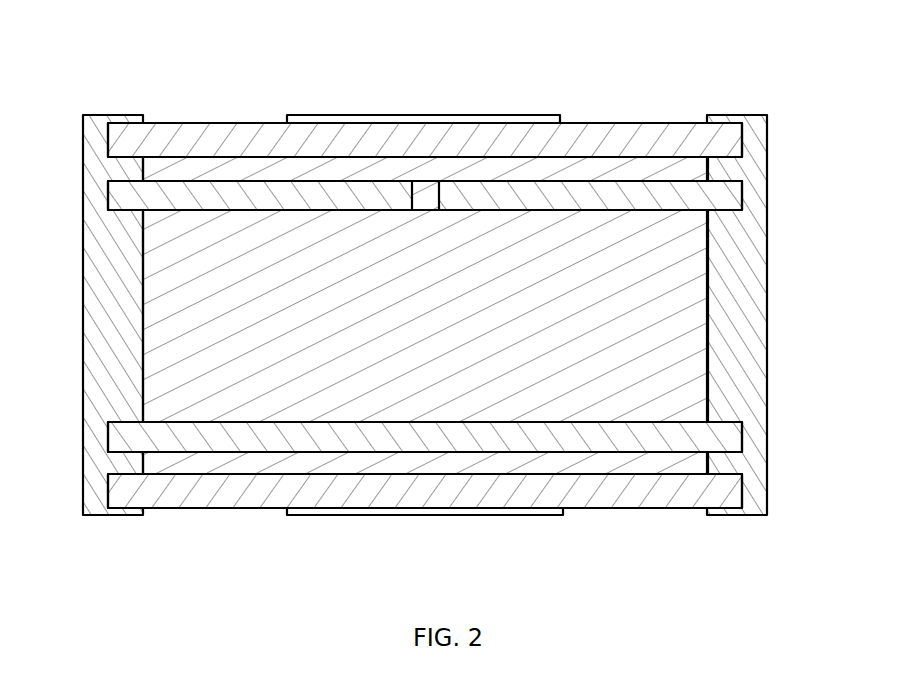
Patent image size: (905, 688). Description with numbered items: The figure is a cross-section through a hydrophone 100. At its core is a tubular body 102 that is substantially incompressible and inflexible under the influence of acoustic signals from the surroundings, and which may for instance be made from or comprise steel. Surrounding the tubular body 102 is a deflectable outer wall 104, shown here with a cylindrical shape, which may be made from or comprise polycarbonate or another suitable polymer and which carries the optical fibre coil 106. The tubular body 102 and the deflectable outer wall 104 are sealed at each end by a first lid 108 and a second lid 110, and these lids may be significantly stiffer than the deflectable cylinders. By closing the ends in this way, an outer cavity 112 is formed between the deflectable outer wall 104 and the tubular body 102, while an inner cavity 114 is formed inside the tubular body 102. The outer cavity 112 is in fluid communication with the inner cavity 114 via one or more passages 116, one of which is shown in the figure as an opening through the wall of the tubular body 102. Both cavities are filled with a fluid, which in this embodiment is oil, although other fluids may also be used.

The hydrophone 100 is at (435, 306).
The tubular body 102 is at (192, 193).
The deflectable outer wall 104 is at (215, 140).
The optical fibre coil 106 is at (557, 108).
The first lid 108 is at (96, 490).
The second lid 110 is at (752, 397).
The outer cavity 112 is at (305, 176).
The inner cavity 114 is at (390, 338).
The passage 116 is at (430, 189).